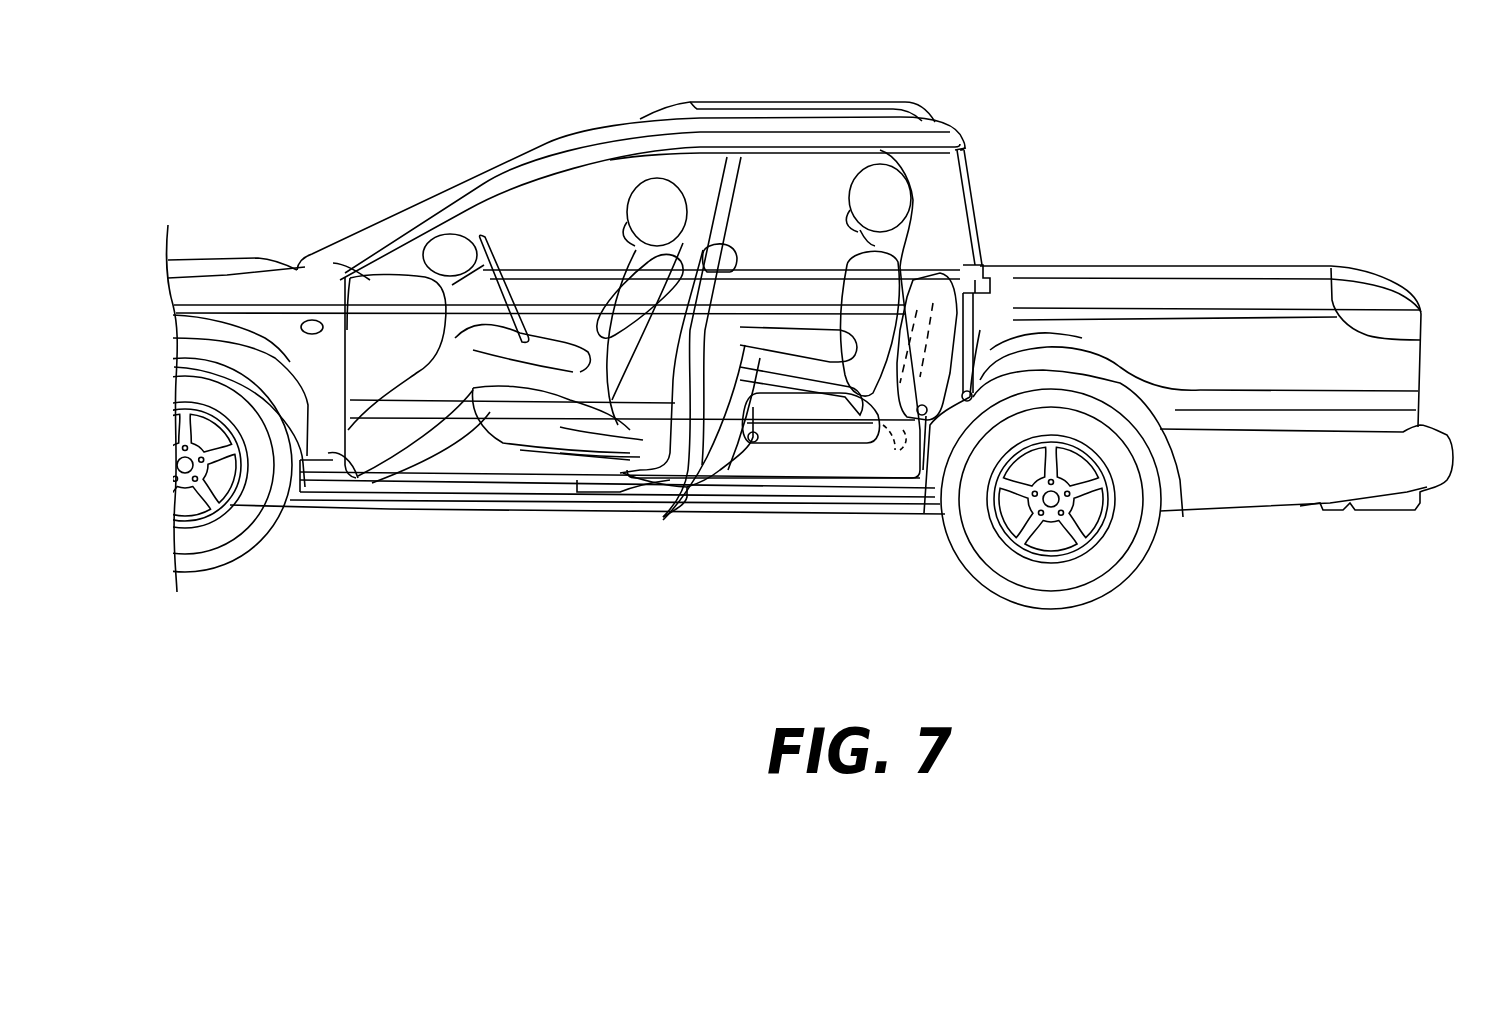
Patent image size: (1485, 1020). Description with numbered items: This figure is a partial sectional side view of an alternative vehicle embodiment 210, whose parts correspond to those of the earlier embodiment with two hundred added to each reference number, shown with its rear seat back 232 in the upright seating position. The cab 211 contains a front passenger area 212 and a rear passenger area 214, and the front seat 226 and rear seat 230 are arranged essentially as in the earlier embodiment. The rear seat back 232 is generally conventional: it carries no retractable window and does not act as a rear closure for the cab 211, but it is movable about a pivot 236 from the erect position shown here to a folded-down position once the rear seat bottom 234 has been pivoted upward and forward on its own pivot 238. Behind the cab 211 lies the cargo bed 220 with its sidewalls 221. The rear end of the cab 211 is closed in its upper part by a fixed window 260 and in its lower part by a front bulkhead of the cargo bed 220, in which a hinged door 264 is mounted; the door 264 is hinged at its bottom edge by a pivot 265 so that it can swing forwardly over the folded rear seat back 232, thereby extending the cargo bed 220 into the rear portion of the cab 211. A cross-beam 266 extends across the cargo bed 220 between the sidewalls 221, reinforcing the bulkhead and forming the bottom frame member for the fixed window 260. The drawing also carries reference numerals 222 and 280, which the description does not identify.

The vehicle 210 is at (887, 58).
The cab 211 is at (598, 135).
The front passenger area 212 is at (593, 223).
The rear passenger area 214 is at (803, 237).
The cargo bed 220 is at (1208, 266).
The sidewalls 221 is at (1266, 366).
The rear bumper 222 is at (1255, 427).
The front seat 226 is at (517, 440).
The rear seat 230 is at (846, 455).
The rear seat back 232 is at (960, 257).
The rear seat bottom 234 is at (820, 437).
The pivot 236 is at (925, 470).
The pivot 238 is at (747, 440).
The fixed window 260 is at (968, 196).
The hinged door 264 is at (990, 285).
The pivot 265 is at (1070, 337).
The cross-beam 266 is at (980, 330).
The roof 280 is at (925, 126).